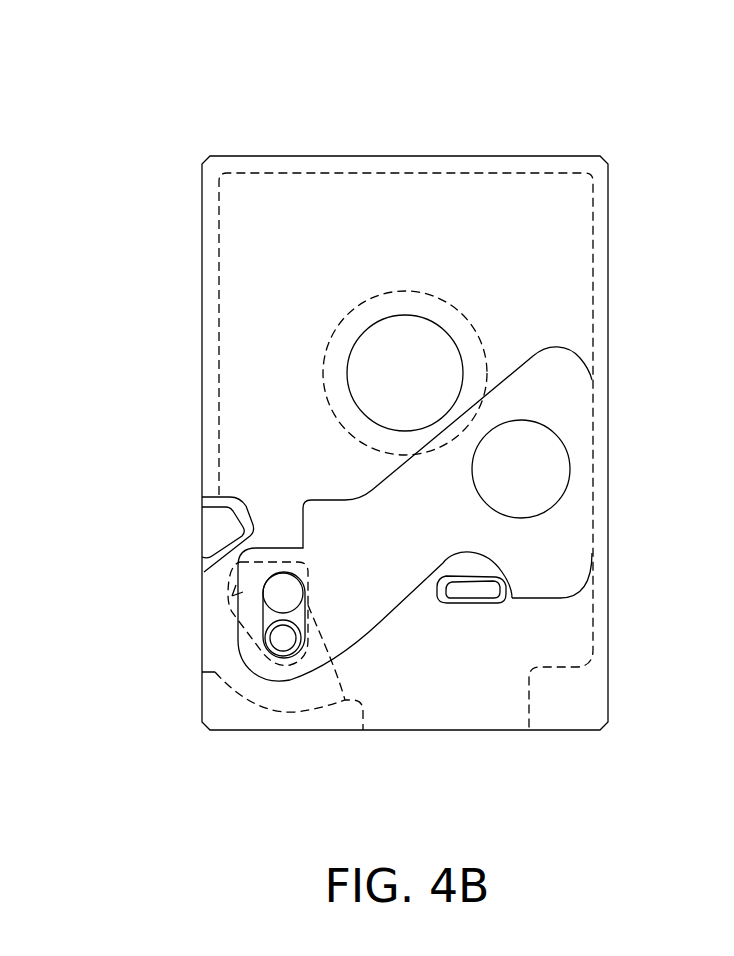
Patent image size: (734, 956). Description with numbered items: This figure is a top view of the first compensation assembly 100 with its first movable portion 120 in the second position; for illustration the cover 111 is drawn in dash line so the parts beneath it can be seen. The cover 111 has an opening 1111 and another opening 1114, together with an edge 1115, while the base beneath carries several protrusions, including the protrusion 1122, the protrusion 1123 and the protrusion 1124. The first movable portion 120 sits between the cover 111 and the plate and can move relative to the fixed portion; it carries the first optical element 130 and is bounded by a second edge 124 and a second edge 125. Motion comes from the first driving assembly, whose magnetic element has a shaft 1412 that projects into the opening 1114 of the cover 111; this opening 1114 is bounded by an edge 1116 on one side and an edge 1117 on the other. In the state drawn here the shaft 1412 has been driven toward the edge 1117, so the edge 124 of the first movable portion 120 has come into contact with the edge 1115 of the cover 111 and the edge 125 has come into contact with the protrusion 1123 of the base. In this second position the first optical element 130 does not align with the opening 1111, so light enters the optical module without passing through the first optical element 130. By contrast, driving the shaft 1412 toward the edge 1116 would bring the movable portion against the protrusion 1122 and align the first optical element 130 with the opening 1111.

The first compensation assembly 100 is at (133, 74).
The cover 111 is at (308, 202).
The opening 1111 is at (412, 291).
The second edge 124 is at (590, 408).
The first movable portion 120 is at (361, 521).
The edge 1115 is at (594, 436).
The first optical element 130 is at (548, 473).
The protrusion 1122 is at (215, 532).
The second edge 125 is at (503, 574).
The protrusion 1123 is at (482, 588).
The shaft 1412 is at (283, 593).
The edge 1116 is at (230, 617).
The protrusion 1124 is at (283, 638).
The edge 1117 is at (346, 700).
The opening 1114 is at (316, 590).